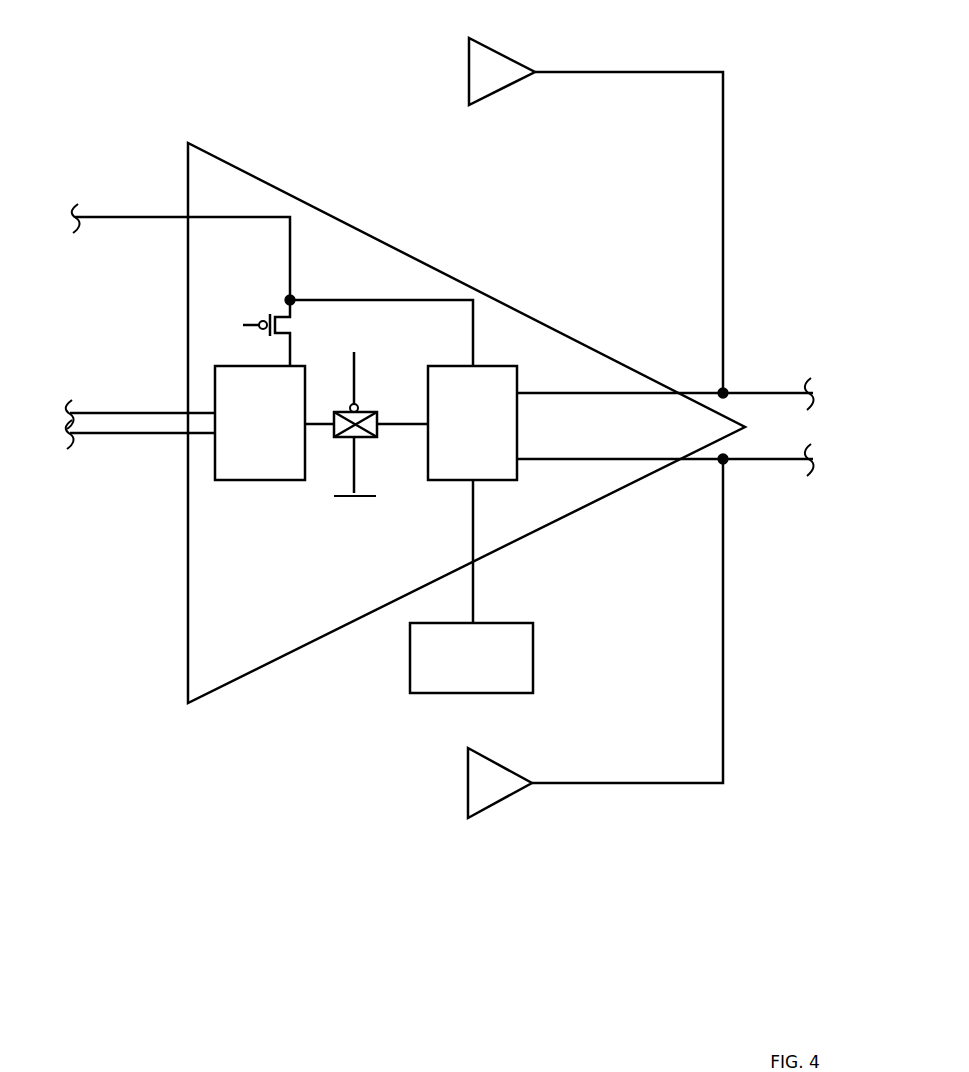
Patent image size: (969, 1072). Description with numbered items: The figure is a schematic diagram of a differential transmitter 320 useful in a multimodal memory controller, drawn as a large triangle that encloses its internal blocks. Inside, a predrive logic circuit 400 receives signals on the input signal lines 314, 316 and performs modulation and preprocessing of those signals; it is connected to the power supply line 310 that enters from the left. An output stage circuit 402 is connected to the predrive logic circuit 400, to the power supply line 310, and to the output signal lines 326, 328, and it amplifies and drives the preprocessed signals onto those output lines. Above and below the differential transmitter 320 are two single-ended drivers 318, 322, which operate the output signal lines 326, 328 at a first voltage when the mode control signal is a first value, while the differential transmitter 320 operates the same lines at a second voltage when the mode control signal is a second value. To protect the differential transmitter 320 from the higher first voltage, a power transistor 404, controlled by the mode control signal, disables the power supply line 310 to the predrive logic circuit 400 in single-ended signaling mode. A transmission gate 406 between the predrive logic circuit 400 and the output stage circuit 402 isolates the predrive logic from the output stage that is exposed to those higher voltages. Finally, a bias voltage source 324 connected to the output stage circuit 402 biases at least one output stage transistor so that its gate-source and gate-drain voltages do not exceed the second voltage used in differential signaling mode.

The power supply line 310 is at (126, 217).
The first input signal line 314 is at (106, 413).
The second input signal line 316 is at (106, 433).
The first single-ended driver 318 is at (469, 72).
The differential transmitter 320 is at (466, 423).
The second single-ended driver 322 is at (468, 783).
The bias voltage source 324 is at (471, 586).
The first output signal line 326 is at (764, 393).
The second output signal line 328 is at (764, 459).
The predrive logic circuit 400 is at (260, 423).
The output stage circuit 402 is at (472, 423).
The power transistor 404 is at (284, 315).
The transmission gate 406 is at (374, 439).